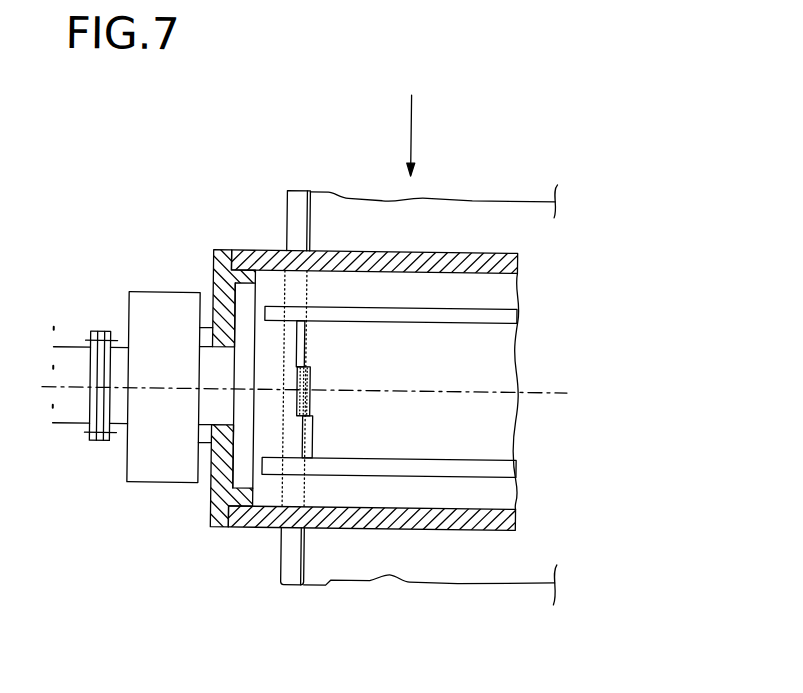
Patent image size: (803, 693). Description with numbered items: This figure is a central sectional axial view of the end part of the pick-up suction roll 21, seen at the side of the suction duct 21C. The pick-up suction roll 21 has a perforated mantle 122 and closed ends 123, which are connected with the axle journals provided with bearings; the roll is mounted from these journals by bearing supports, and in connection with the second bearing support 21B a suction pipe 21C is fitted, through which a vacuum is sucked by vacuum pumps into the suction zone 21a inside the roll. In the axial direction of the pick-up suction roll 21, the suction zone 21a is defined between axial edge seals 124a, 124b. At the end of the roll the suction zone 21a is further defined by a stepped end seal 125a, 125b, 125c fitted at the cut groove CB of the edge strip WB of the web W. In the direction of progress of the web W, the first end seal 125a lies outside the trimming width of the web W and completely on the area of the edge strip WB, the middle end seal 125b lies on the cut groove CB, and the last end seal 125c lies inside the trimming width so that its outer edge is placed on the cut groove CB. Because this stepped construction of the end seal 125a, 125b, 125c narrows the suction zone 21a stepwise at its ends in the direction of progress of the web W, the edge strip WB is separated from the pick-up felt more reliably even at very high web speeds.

The pick-up suction roll 21 is at (502, 300).
The suction zone 21a is at (493, 378).
The second bearing support 21B is at (161, 471).
The suction pipe 21C is at (69, 364).
The perforated mantle 122 is at (525, 265).
The closed end 123 is at (207, 275).
The axial edge seal 124a is at (515, 318).
The axial edge seal 124b is at (518, 469).
The first end seal 125a is at (305, 340).
The middle end seal 125b is at (310, 398).
The last end seal 125c is at (308, 443).
The web W is at (465, 217).
The edge strip WB is at (289, 208).
The cut groove CB is at (305, 192).